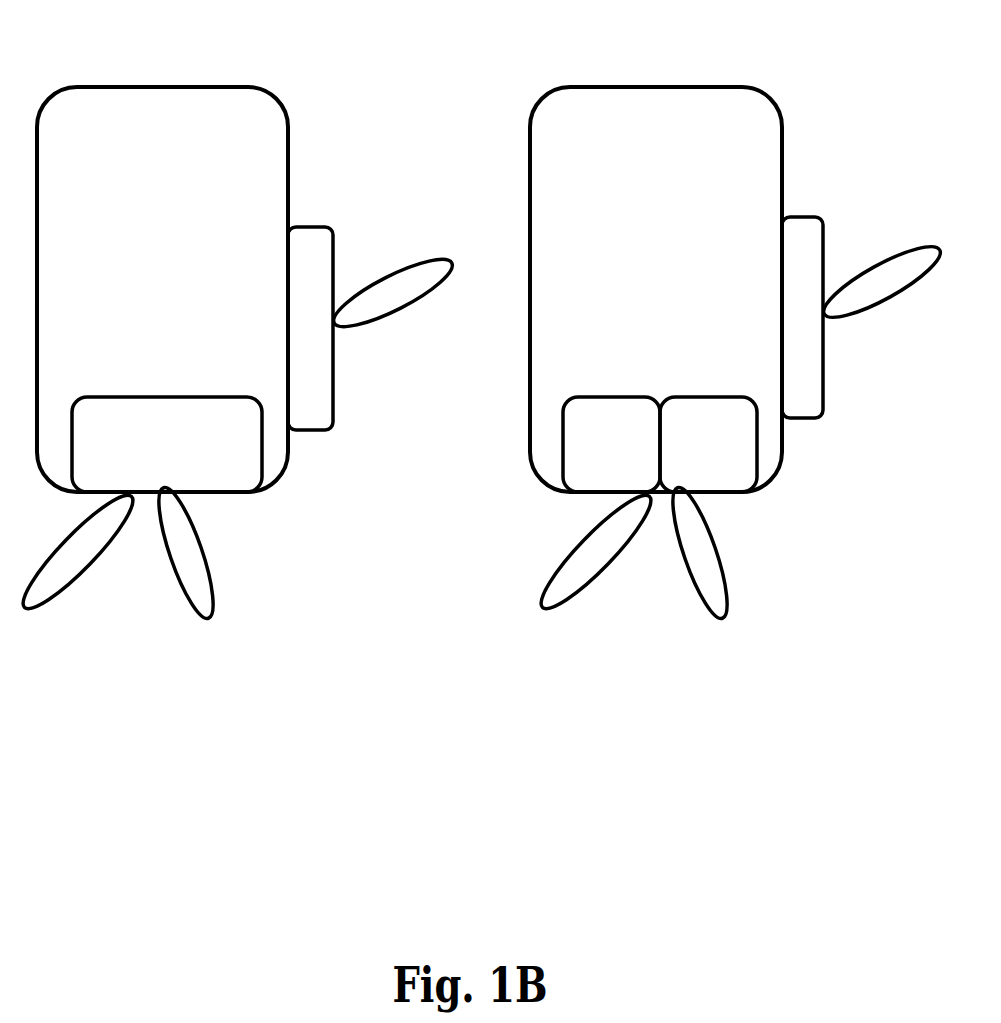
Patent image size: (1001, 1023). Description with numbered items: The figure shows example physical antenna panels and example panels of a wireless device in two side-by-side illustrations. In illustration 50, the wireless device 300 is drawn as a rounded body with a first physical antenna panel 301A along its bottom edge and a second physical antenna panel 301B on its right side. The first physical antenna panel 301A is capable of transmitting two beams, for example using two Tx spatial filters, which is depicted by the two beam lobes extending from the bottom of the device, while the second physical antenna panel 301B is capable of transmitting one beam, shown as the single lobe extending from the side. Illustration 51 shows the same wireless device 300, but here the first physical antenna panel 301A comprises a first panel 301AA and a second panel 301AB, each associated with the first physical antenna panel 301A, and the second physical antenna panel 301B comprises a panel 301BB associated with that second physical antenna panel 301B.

The illustration 50 is at (235, 320).
The illustration 51 is at (739, 315).
The wireless device 300 is at (409, 289).
The first physical antenna panel 301A is at (167, 444).
The second physical antenna panel 301B is at (310, 328).
The first panel 301AA is at (611, 444).
The second panel 301AB is at (708, 444).
The panel 301BB is at (802, 317).